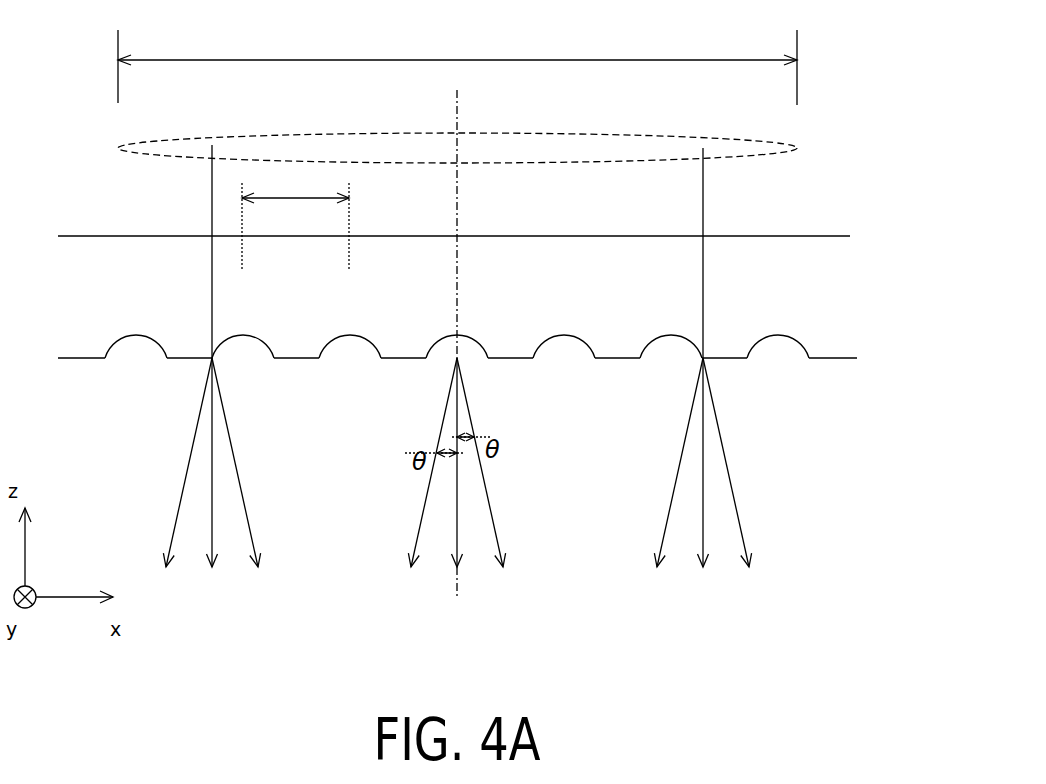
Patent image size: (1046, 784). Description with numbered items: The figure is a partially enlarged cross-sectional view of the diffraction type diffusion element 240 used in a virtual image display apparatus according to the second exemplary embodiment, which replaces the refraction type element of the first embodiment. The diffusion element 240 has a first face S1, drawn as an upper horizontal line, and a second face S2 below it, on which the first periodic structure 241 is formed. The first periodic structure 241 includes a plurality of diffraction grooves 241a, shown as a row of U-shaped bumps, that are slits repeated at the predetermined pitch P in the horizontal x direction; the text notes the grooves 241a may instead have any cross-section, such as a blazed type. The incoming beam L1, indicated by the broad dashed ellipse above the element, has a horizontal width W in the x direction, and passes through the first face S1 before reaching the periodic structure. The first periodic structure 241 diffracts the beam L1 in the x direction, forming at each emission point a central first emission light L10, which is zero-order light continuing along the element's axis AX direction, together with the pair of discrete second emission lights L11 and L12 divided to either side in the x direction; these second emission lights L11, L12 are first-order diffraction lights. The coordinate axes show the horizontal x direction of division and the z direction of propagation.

The diffusion element 240 is at (815, 148).
The first periodic structure 241 is at (134, 460).
The diffraction grooves 241a is at (136, 340).
The beam L1 is at (633, 133).
The first emission light L10 is at (215, 478).
The second emission light L11 is at (198, 418).
The second emission light L12 is at (226, 418).
The first face S1 is at (790, 236).
The second face S2 is at (857, 358).
The optical axis AX is at (460, 578).
The horizontal width of the beam W is at (457, 67).
The pitch P is at (295, 219).